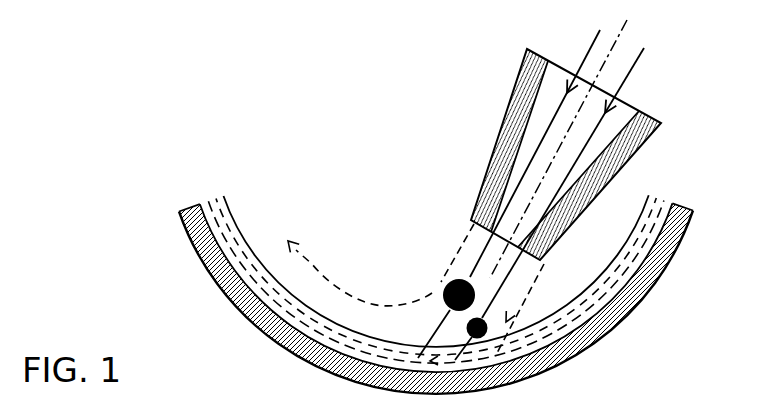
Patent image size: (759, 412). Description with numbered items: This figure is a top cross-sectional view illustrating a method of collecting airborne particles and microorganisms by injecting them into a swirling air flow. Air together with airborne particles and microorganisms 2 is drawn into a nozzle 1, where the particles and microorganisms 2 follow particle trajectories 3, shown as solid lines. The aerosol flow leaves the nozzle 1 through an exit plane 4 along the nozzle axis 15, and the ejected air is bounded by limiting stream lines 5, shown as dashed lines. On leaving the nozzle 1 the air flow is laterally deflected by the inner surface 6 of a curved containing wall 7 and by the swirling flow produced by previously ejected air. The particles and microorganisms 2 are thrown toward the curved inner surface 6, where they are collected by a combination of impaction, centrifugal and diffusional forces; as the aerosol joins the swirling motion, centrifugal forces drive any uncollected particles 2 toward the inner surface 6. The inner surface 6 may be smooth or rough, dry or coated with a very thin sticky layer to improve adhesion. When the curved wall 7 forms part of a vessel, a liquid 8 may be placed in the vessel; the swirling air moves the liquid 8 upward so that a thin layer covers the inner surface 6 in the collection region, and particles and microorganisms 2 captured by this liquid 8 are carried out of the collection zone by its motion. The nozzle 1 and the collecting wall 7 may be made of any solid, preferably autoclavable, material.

The nozzle 1 is at (519, 70).
The particles and microorganisms 2 is at (438, 291).
The particle trajectories 3 is at (588, 48).
The exit plane 4 is at (473, 221).
The limiting stream lines 5 is at (307, 260).
The inner surface 6 is at (557, 363).
The curved containing wall 7 is at (641, 293).
The liquid 8 is at (657, 197).
The nozzle axis 15 is at (617, 47).